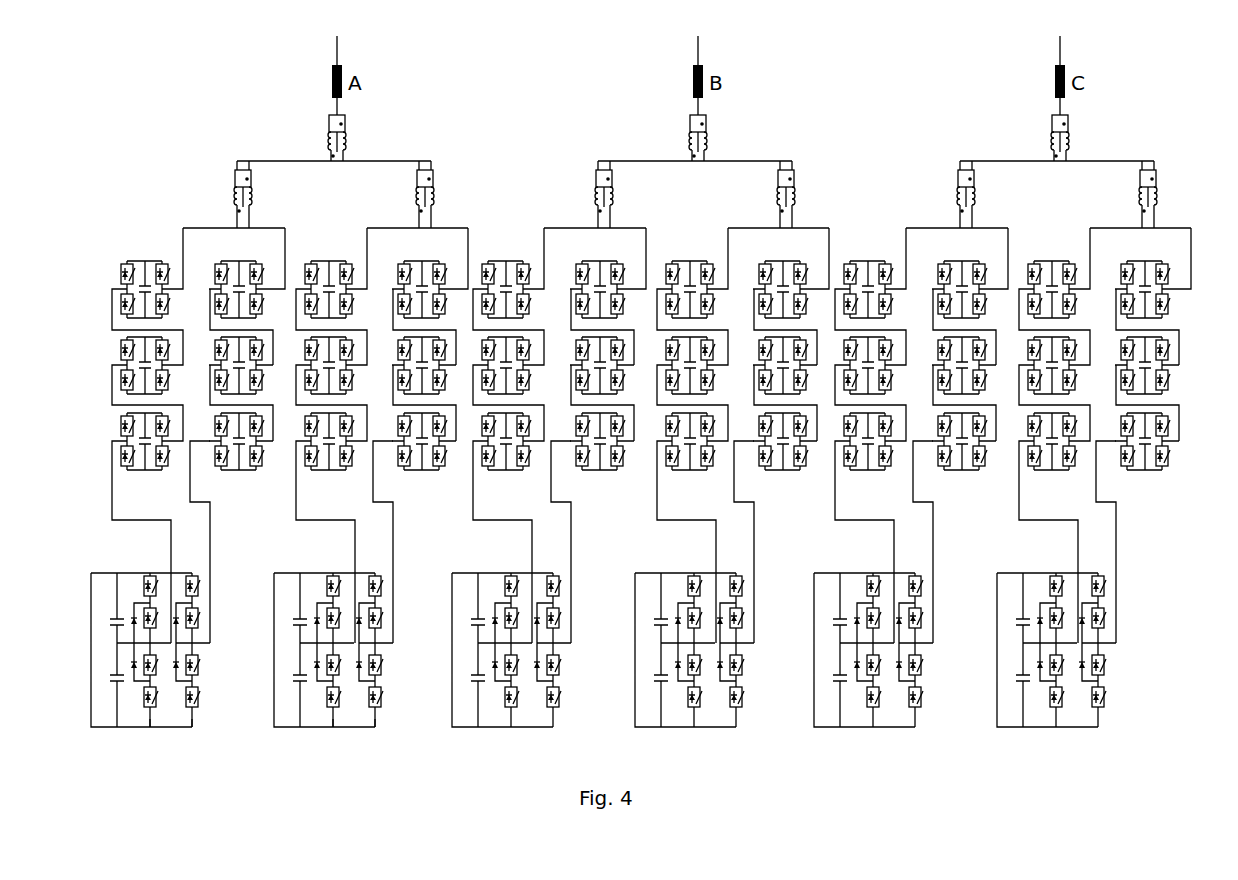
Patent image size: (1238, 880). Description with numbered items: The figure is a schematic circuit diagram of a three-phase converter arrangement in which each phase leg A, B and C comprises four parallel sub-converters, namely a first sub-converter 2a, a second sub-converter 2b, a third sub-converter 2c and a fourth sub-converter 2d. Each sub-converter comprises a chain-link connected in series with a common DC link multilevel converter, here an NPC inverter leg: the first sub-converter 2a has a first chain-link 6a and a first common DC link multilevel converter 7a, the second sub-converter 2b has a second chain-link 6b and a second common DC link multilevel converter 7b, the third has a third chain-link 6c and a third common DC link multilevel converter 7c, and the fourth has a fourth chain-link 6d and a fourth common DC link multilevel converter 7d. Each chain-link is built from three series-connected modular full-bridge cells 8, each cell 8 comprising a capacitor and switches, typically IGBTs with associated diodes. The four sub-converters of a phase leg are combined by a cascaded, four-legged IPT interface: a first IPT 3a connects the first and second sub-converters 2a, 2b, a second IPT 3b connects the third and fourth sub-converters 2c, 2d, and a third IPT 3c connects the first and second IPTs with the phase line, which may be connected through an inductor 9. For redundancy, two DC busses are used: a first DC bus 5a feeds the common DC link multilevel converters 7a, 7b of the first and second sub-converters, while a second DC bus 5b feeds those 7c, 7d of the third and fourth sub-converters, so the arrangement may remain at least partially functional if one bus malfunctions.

The inductor 9 is at (332, 80).
The first IPT 3a is at (251, 178).
The second IPT 3b is at (433, 177).
The third IPT 3c is at (343, 120).
The first chain-link 6a is at (134, 413).
The second chain-link 6b is at (300, 240).
The third chain-link 6c is at (347, 228).
The fourth chain-link 6d is at (463, 218).
The full-bridge cell 8 is at (114, 276).
The first DC bus 5a is at (505, 692).
The second DC bus 5b is at (679, 692).
The first sub-converter 2a is at (94, 767).
The second sub-converter 2b is at (225, 690).
The third sub-converter 2c is at (254, 767).
The fourth sub-converter 2d is at (410, 690).
The first common DC link multilevel converter 7a is at (150, 738).
The second common DC link multilevel converter 7b is at (188, 738).
The third common DC link multilevel converter 7c is at (333, 738).
The fourth common DC link multilevel converter 7d is at (375, 738).